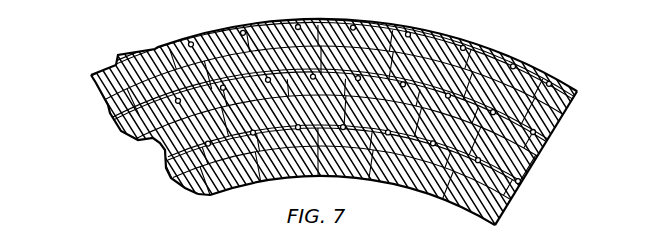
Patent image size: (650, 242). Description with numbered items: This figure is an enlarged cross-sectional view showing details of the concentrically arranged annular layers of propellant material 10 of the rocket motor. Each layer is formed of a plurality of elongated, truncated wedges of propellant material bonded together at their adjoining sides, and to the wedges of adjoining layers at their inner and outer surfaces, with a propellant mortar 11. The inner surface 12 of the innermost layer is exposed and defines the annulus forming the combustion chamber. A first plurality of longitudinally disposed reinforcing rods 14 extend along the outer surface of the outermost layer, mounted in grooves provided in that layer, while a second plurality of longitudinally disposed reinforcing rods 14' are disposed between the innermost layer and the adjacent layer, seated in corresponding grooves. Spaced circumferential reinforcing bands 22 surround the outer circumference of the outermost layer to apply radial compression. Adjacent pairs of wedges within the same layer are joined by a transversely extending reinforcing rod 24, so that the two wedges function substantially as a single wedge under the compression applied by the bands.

The propellant material 10 is at (325, 125).
The propellant mortar 11 is at (155, 39).
The inner surface 12 is at (218, 183).
The longitudinally disposed reinforcing rods 14 is at (331, 77).
The longitudinally disposed reinforcing rods 14' is at (372, 157).
The circumferential reinforcing bands 22 is at (565, 83).
The transversely extending reinforcing rod 24 is at (541, 77).